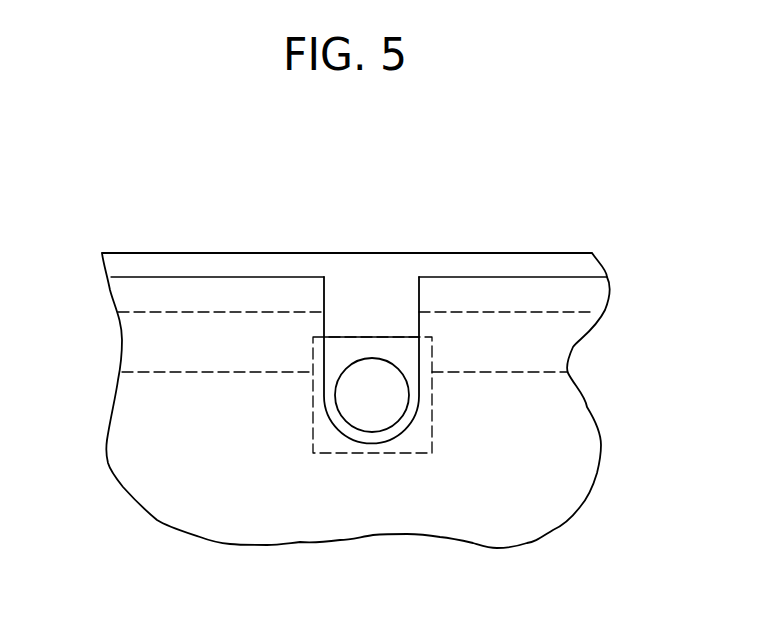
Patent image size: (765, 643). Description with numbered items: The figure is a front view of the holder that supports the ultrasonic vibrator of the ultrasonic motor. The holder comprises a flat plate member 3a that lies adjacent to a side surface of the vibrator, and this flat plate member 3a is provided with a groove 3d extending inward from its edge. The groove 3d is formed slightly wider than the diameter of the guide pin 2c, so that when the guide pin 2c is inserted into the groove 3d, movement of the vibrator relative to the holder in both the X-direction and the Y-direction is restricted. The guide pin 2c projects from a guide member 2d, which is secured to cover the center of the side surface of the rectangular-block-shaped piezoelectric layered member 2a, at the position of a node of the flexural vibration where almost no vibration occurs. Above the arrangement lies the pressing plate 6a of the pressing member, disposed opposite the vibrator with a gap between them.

The piezoelectric layered member 2a is at (537, 370).
The guide pin 2c is at (405, 413).
The guide member 2d is at (371, 337).
The flat plate member 3a is at (542, 277).
The groove 3d is at (325, 348).
The pressing plate 6a is at (452, 252).